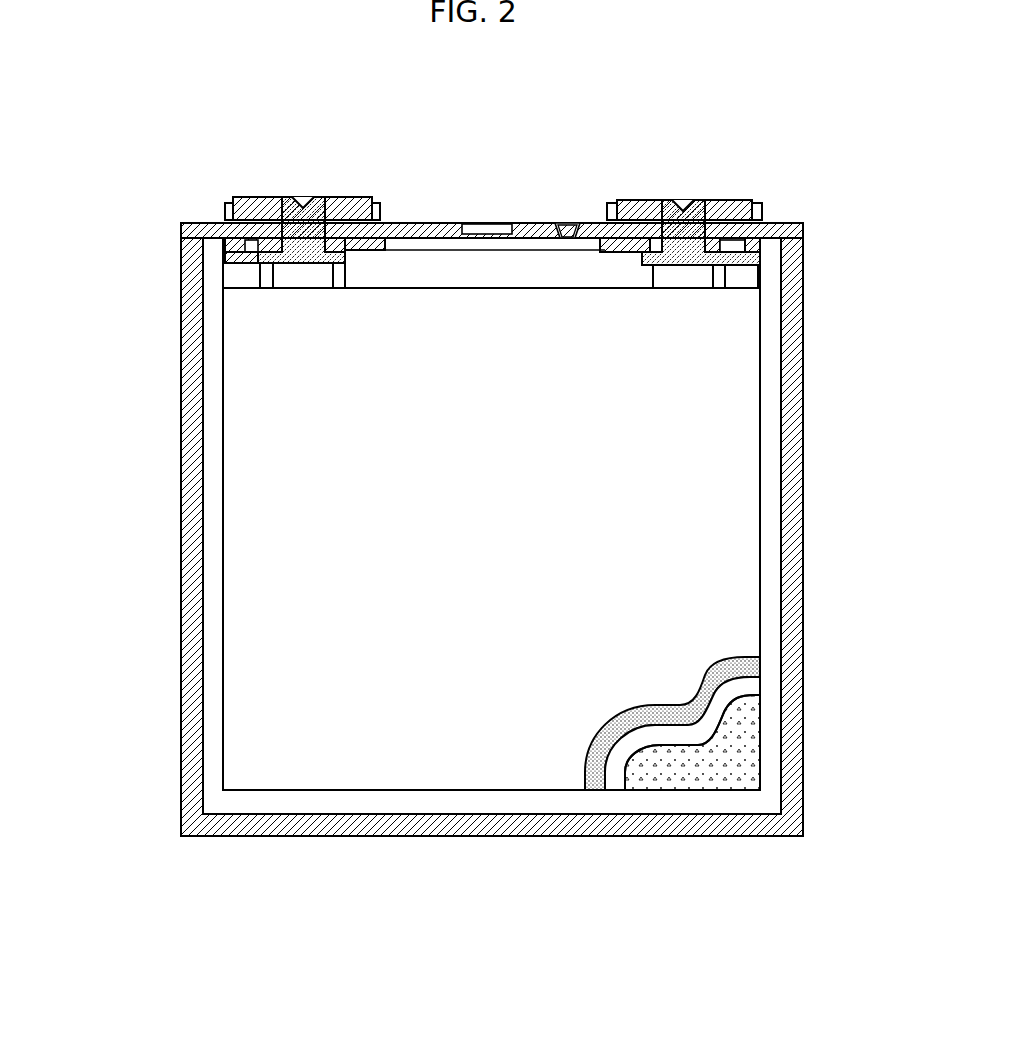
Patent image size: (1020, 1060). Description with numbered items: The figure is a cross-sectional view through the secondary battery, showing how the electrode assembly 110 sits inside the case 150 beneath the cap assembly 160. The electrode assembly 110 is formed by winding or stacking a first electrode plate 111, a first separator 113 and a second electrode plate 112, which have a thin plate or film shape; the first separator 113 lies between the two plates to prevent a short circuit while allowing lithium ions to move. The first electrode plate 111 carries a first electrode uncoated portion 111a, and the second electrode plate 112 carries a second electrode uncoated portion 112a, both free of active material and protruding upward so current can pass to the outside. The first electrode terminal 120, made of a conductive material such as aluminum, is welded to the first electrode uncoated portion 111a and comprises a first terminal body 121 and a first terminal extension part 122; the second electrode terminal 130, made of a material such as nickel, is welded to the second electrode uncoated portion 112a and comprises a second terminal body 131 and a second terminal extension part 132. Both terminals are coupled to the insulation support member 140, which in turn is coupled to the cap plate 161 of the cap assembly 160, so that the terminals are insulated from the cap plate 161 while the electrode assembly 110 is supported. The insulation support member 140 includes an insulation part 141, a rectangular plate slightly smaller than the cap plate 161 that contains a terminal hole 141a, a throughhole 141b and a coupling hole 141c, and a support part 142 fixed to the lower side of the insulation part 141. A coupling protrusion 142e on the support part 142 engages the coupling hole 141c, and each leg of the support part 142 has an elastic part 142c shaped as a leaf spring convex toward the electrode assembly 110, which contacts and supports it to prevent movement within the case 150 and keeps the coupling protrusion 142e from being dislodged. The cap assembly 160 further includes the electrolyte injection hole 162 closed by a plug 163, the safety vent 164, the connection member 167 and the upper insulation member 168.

The electrode assembly 110 is at (491, 569).
The first electrode plate 111 is at (718, 776).
The first electrode uncoated portion 111a is at (305, 278).
The second electrode plate 112 is at (590, 778).
The second electrode uncoated portion 112a is at (683, 280).
The first separator 113 is at (615, 778).
The first electrode terminal 120 is at (297, 168).
The first terminal body 121 is at (283, 199).
The first terminal extension part 122 is at (243, 200).
The second electrode terminal 130 is at (692, 169).
The second terminal body 131 is at (703, 200).
The second terminal extension part 132 is at (742, 200).
The insulation support member 140 is at (473, 252).
The insulation part 141 is at (187, 232).
The terminal hole 141a is at (318, 266).
The throughhole 141b is at (410, 252).
The coupling hole 141c is at (247, 264).
The support part 142 is at (227, 245).
The elastic part 142c is at (232, 281).
The coupling protrusion 142e is at (240, 292).
The case 150 is at (803, 461).
The cap assembly 160 is at (455, 222).
The cap plate 161 is at (415, 222).
The electrolyte injection hole 162 is at (562, 222).
The plug 163 is at (577, 222).
The safety vent 164 is at (487, 223).
The connection member 167 is at (380, 201).
The upper insulation member 168 is at (609, 203).